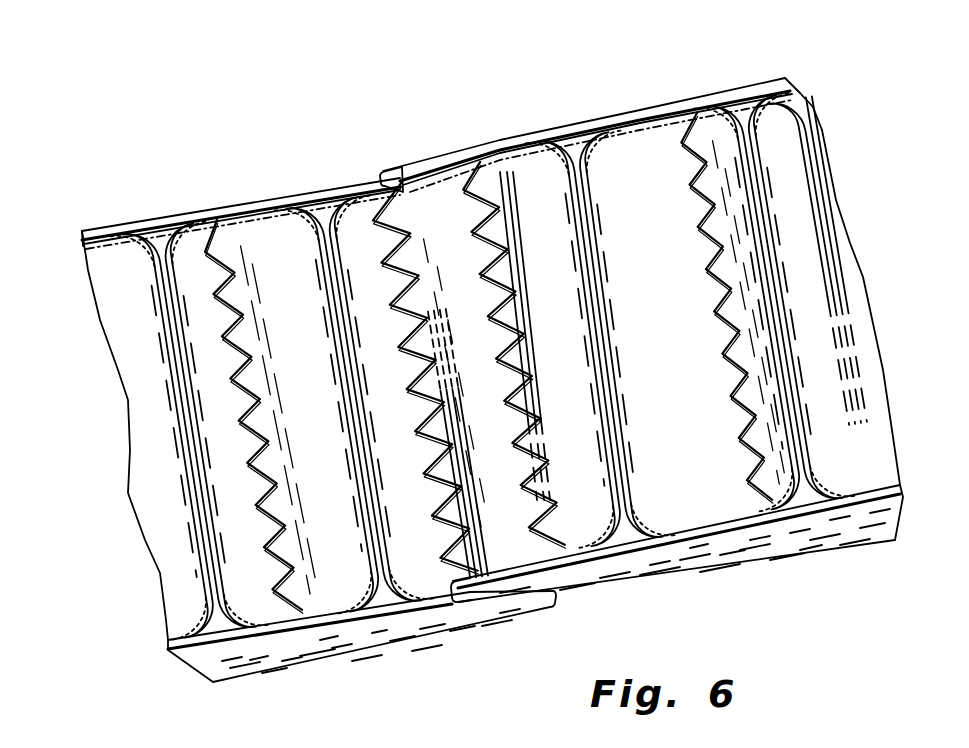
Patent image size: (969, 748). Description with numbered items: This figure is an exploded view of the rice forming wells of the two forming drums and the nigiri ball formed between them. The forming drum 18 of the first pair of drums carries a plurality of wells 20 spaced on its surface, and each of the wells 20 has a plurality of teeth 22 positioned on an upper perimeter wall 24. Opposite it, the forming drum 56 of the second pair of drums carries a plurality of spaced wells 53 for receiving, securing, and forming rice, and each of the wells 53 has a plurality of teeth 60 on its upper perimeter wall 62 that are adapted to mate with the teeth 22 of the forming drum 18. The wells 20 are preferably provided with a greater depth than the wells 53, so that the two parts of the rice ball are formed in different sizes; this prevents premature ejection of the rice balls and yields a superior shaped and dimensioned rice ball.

The forming drum 18 is at (166, 204).
The upper perimeter wall 24 is at (266, 203).
The wells 20 is at (347, 263).
The teeth 22 is at (406, 290).
The teeth 60 is at (385, 258).
The upper perimeter wall 62 is at (540, 143).
The wells 53 is at (655, 200).
The forming drum 56 is at (666, 98).